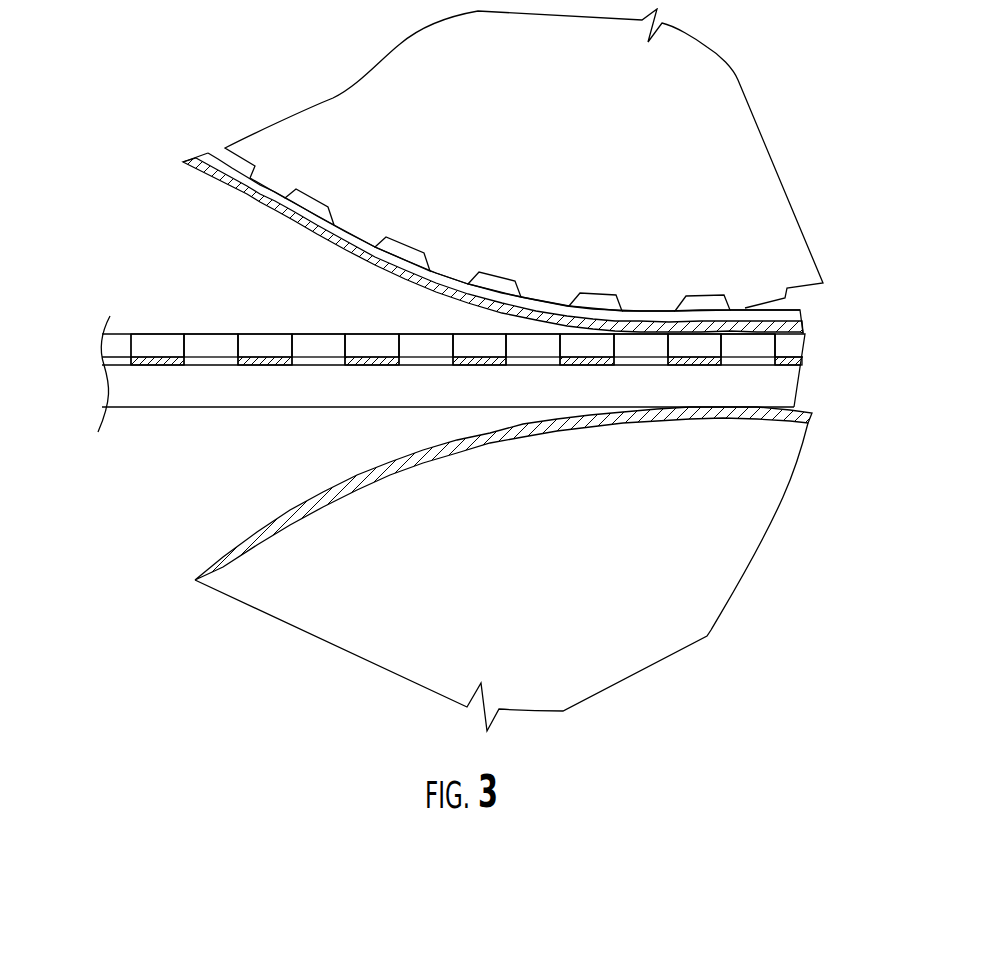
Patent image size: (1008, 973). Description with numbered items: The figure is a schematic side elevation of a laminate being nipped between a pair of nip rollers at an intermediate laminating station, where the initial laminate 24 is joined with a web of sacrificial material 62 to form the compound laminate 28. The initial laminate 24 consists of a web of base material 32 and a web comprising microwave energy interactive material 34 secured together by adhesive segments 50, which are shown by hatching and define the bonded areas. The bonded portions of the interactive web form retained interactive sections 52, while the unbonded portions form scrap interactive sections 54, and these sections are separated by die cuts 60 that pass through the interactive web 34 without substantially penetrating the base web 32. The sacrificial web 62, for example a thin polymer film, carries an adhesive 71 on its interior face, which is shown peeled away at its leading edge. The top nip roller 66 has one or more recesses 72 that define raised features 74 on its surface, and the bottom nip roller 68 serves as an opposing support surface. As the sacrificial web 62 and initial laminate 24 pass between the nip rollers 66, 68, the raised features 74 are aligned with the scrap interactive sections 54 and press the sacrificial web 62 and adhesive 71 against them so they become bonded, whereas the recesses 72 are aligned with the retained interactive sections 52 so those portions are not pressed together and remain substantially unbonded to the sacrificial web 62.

The initial laminate 24 is at (116, 446).
The compound laminate 28 is at (805, 310).
The web of base material 32 is at (792, 376).
The web comprising microwave energy interactive material 34 is at (800, 332).
The adhesive segments 50 is at (142, 359).
The retained interactive sections 52 is at (152, 337).
The scrap interactive sections 54 is at (205, 337).
The die cuts 60 is at (122, 342).
The web of sacrificial material 62 is at (364, 238).
The top nip roller 66 is at (737, 135).
The bottom nip roller 68 is at (650, 642).
The adhesive 71 is at (207, 179).
The recesses 72 is at (579, 282).
The raised features 74 is at (250, 175).